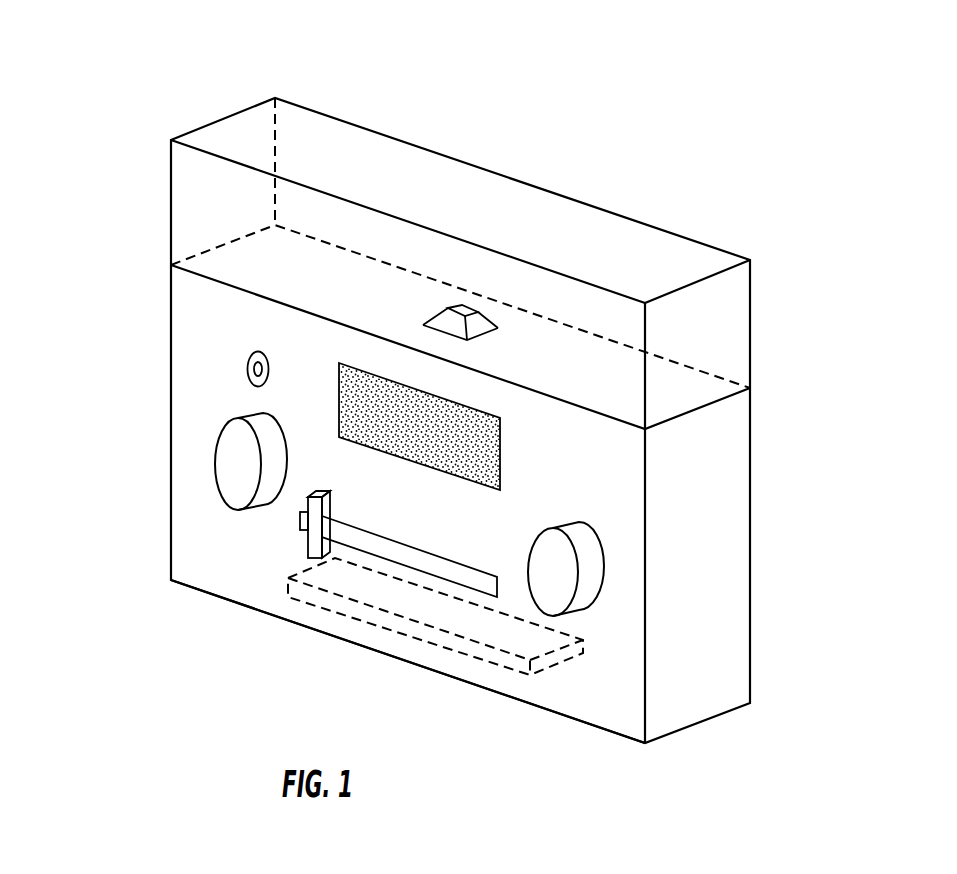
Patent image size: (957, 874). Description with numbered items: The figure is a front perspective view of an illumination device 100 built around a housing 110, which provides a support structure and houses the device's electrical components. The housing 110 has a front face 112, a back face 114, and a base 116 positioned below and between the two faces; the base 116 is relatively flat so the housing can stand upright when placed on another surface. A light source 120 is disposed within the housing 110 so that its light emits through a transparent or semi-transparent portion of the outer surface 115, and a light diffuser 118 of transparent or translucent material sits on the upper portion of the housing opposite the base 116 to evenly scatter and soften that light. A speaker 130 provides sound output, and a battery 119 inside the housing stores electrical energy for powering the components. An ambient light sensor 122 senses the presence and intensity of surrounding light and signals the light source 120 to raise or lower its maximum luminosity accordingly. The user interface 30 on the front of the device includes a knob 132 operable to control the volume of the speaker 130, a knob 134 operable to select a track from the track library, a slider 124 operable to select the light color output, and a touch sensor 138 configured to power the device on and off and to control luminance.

The illumination device 100 is at (146, 51).
The housing 110 is at (182, 530).
The front face 112 is at (609, 485).
The back face 114 is at (756, 469).
The outer surface 115 is at (683, 697).
The base 116 is at (512, 714).
The light diffuser 118 is at (682, 267).
The battery 119 is at (520, 642).
The light source 120 is at (460, 308).
The ambient light sensor 122 is at (248, 358).
The slider 124 is at (300, 547).
The speaker 130 is at (472, 430).
The knob 132 is at (232, 460).
The knob 134 is at (563, 585).
The touch sensor 138 is at (238, 208).
The user interface 30 is at (420, 508).